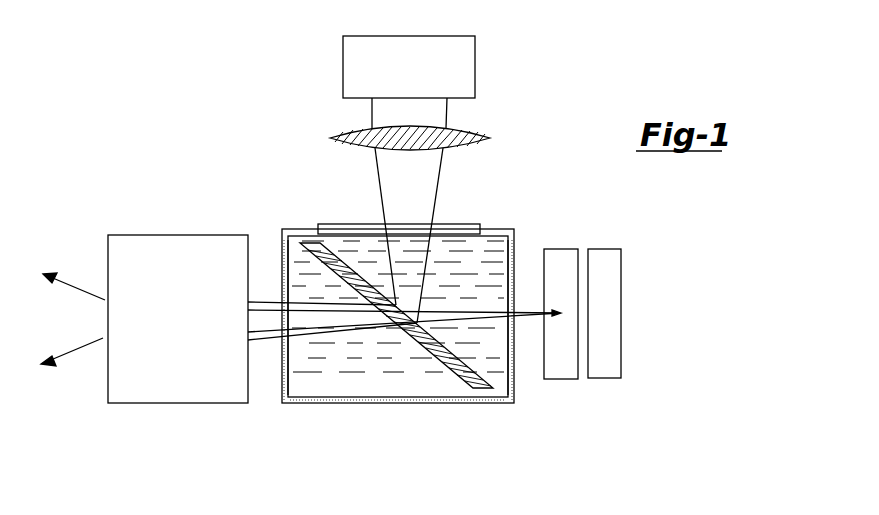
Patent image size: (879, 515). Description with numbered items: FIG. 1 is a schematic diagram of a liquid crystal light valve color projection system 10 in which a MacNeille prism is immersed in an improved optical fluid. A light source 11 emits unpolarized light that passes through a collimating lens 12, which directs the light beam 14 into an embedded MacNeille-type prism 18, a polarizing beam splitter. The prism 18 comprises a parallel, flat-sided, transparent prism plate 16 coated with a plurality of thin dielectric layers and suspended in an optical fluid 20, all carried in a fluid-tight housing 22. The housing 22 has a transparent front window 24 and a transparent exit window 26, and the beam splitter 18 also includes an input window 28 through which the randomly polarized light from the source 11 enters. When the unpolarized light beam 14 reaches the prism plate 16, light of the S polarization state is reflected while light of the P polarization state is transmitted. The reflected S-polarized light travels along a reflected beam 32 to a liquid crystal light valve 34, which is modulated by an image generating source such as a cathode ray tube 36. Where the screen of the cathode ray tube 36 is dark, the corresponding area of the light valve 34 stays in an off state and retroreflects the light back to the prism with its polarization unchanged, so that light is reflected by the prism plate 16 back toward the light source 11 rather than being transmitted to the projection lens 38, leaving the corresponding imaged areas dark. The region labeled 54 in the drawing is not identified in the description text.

The color projection system 10 is at (546, 143).
The light source 11 is at (475, 66).
The collimating lens 12 is at (460, 134).
The light beam 14 is at (440, 188).
The prism plate 16 is at (452, 368).
The embedded MacNeille-type prism 18 is at (517, 203).
The optical fluid 20 is at (476, 276).
The fluid-tight housing 22 is at (310, 403).
The transparent front window 24 is at (509, 285).
The transparent exit window 26 is at (283, 262).
The input window 28 is at (346, 224).
The reflected beam 32 is at (469, 314).
The liquid crystal light valve 34 is at (560, 249).
The cathode ray tube 36 is at (605, 249).
The projection lens 38 is at (196, 235).
The liquid gap 54 is at (313, 302).